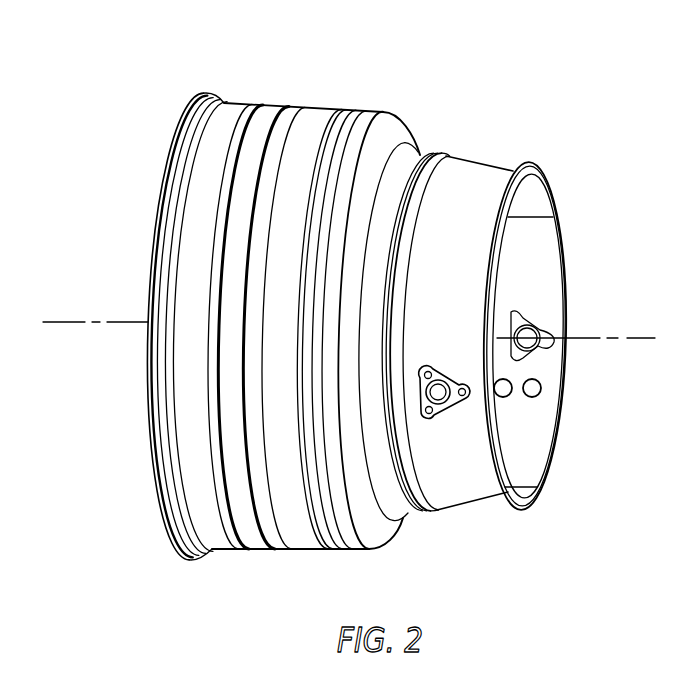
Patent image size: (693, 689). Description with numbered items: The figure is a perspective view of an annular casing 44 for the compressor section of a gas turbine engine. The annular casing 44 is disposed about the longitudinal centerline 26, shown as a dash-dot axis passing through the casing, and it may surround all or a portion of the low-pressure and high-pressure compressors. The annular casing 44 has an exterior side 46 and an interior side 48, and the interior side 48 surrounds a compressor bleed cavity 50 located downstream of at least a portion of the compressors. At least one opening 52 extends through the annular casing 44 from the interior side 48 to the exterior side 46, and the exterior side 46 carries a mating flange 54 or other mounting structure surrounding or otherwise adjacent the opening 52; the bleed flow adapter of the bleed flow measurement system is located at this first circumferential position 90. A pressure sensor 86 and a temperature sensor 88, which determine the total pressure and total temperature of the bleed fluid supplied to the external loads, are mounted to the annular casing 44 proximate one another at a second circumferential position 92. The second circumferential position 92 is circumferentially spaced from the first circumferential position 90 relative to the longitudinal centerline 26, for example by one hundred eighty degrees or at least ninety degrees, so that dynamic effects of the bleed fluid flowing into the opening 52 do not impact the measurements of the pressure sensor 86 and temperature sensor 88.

The longitudinal centerline 26 is at (65, 323).
The annular casing 44 is at (542, 126).
The exterior side 46 is at (468, 178).
The interior side 48 is at (528, 474).
The compressor bleed cavity 50 is at (534, 241).
The opening 52 is at (437, 380).
The mating flange 54 is at (443, 417).
The pressure sensor 86 is at (505, 397).
The temperature sensor 88 is at (541, 388).
The first circumferential position 90 is at (419, 392).
The second circumferential position 92 is at (568, 401).